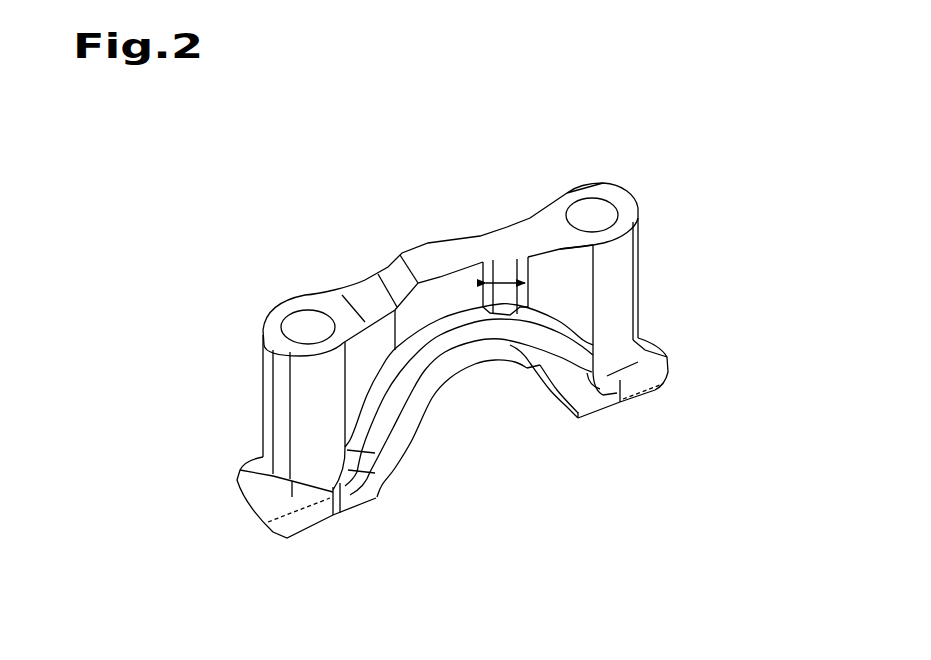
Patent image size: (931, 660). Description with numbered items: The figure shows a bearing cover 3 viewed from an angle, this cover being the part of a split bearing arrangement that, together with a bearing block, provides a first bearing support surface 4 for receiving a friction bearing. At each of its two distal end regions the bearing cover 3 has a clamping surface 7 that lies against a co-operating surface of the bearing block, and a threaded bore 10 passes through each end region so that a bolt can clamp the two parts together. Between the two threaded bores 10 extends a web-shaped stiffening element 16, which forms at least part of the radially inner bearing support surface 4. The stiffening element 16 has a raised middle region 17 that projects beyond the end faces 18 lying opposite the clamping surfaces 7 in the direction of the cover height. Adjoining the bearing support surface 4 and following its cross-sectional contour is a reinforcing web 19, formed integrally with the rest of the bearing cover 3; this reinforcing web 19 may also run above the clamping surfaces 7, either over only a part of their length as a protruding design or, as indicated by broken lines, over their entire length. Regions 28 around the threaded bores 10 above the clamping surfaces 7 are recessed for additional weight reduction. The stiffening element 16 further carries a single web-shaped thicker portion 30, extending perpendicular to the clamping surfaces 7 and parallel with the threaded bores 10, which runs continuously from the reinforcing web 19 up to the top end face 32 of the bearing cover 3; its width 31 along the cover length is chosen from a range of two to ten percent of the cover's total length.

The bearing cover 3 is at (650, 167).
The first bearing support surface 4 is at (503, 363).
The clamping surface 7 is at (307, 527).
The threaded bore 10 is at (598, 213).
The stiffening element 16 is at (395, 248).
The raised middle region 17 is at (422, 263).
The end face 18 is at (305, 295).
The reinforcing web 19 is at (470, 350).
The region around the threaded bore 28 is at (247, 368).
The thicker portion 30 is at (590, 343).
The width of the thicker portion 31 is at (508, 258).
The top end face 32 is at (458, 238).